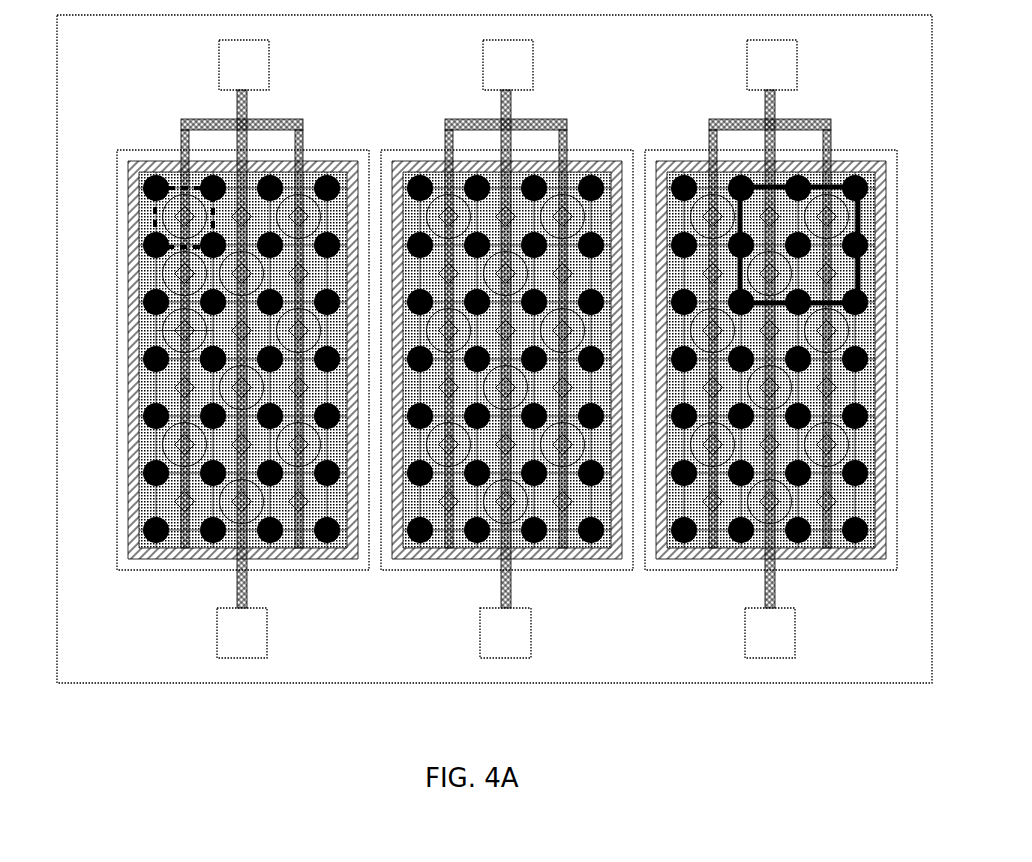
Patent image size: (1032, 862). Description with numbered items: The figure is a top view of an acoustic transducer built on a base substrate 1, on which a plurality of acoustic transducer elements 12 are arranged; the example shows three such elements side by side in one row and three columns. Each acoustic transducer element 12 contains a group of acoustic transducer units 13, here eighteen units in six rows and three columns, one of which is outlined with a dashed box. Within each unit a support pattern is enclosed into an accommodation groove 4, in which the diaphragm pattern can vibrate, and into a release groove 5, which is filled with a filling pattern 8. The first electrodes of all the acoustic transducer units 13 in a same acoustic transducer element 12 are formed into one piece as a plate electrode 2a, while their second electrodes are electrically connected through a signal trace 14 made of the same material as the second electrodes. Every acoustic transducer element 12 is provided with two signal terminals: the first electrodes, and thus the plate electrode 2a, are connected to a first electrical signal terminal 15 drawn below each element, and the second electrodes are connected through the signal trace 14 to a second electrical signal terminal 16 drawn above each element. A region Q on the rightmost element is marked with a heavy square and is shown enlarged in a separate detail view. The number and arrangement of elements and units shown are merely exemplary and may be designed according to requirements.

The base substrate 1 is at (57, 52).
The plate electrode 2a is at (130, 410).
The accommodation groove 4 is at (168, 327).
The release groove 5 is at (205, 355).
The filling pattern 8 is at (180, 272).
The acoustic transducer element 12 is at (140, 150).
The acoustic transducer unit 13 is at (147, 201).
The signal trace 14 is at (180, 300).
The first electrical signal terminal 15 is at (217, 630).
The second electrical signal terminal 16 is at (219, 57).
The region Q is at (840, 178).